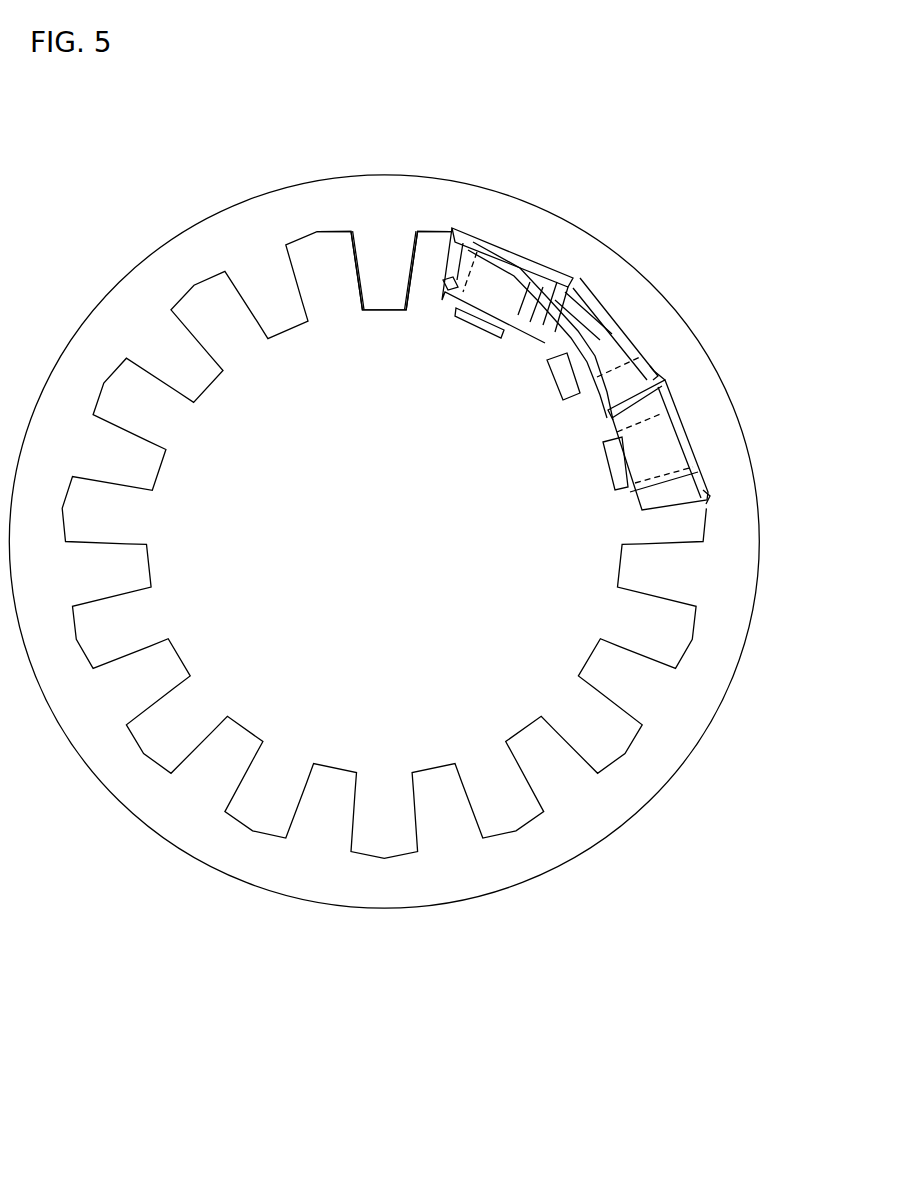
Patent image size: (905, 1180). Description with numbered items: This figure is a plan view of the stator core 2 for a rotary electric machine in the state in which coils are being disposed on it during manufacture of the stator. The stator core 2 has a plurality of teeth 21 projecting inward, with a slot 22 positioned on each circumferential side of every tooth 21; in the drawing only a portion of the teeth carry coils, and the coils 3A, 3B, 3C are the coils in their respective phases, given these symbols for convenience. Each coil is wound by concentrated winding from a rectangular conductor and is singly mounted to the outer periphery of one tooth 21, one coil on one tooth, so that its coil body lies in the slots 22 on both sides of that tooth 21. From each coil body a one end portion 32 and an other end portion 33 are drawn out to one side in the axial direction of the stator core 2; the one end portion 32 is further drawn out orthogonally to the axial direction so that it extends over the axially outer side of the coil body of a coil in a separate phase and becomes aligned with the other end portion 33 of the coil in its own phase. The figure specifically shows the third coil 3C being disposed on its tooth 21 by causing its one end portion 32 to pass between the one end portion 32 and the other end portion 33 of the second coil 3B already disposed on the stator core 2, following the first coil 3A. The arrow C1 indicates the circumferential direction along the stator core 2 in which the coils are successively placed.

The stator core 2 is at (627, 853).
The tooth 21 is at (375, 265).
The slot 22 is at (426, 242).
The coil 3A is at (498, 235).
The coil 3B is at (622, 320).
The coil 3C is at (680, 428).
The one end portion 32 is at (497, 270).
The other end portion 33 is at (656, 372).
The circumferential direction C1 is at (762, 703).